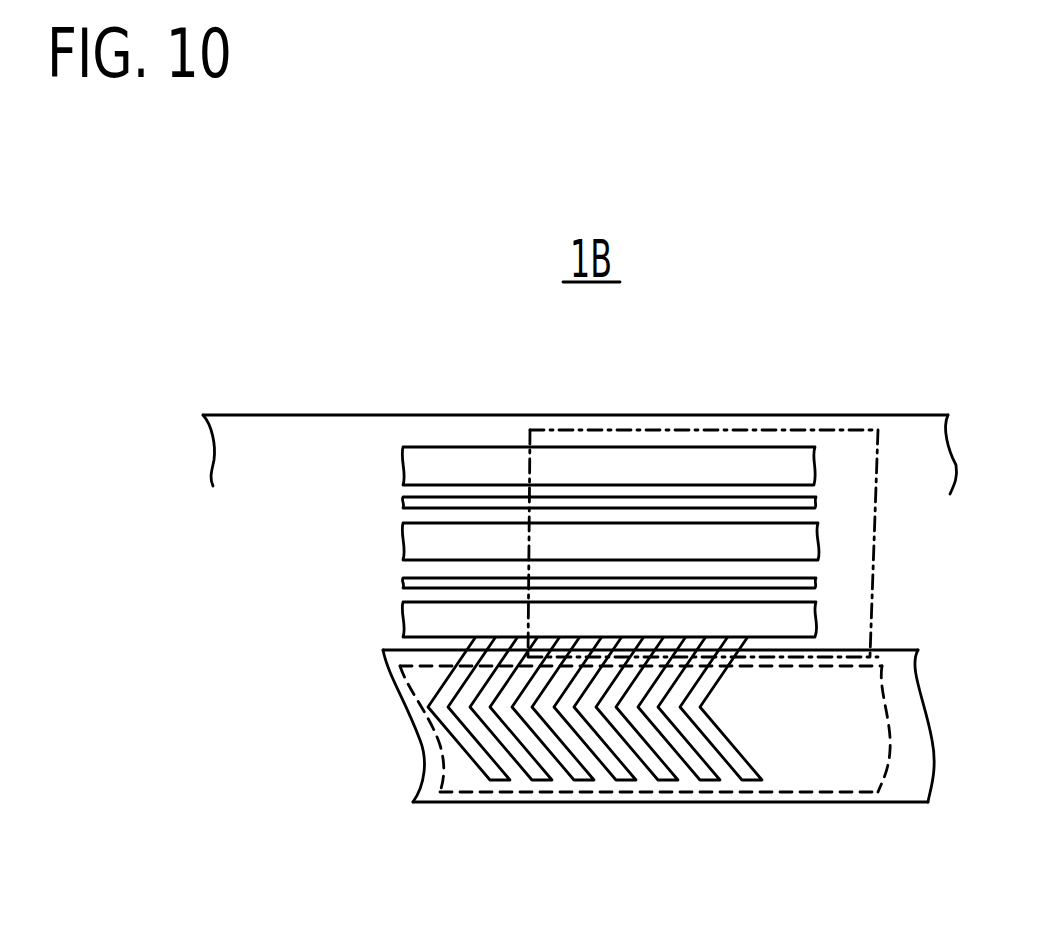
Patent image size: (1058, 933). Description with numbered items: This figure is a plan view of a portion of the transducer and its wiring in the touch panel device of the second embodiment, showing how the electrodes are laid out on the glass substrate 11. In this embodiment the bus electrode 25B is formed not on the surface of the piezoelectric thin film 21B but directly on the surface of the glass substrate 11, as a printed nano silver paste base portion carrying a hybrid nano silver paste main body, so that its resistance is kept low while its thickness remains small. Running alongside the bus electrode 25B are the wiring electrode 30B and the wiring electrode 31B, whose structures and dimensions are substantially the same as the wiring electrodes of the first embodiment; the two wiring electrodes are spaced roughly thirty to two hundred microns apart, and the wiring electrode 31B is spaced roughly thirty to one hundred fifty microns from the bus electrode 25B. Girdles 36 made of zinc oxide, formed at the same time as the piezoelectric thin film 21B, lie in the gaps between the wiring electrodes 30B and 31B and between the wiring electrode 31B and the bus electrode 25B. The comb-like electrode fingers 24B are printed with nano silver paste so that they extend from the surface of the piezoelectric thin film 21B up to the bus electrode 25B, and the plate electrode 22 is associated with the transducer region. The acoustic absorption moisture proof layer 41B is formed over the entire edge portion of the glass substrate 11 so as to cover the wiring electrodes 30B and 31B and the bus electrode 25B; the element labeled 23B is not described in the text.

The glass substrate 11 is at (397, 412).
The acoustic absorption moisture proof layer 41B is at (881, 437).
The wiring electrode 31B is at (403, 468).
The girdle 36 is at (402, 502).
The wiring electrode 30B is at (403, 545).
The bus electrode 25B is at (403, 623).
The piezoelectric thin film 21B is at (427, 806).
The plate electrode 22 is at (519, 794).
The comb-like electrode finger 24B is at (648, 778).
The chevron electrode 23B is at (688, 779).